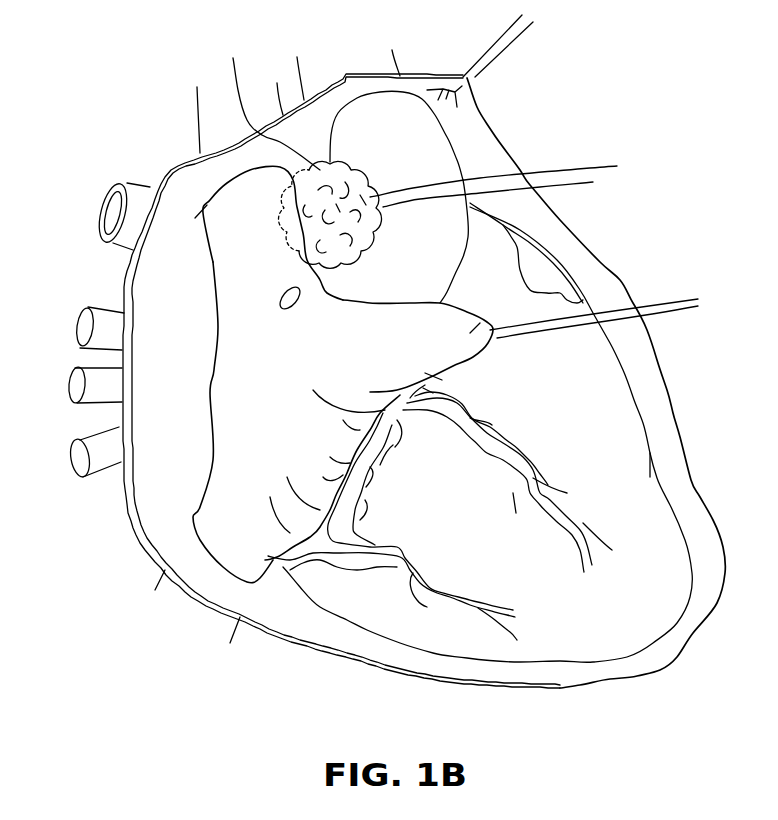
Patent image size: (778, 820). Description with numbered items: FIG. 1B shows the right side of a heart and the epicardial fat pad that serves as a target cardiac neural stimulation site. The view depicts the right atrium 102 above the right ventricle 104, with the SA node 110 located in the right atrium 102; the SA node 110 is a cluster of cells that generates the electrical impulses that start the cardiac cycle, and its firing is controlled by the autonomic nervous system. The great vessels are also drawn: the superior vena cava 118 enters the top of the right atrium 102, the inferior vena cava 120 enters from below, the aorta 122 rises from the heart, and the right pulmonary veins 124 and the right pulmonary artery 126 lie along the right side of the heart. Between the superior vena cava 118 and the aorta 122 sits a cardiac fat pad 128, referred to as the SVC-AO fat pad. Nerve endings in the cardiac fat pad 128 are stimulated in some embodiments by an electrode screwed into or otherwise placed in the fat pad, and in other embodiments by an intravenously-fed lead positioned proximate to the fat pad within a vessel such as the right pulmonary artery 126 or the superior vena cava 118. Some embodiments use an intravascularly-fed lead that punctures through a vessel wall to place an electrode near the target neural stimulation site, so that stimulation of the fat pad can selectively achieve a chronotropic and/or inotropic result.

The right atrium 102 is at (292, 370).
The right ventricle 104 is at (468, 553).
The sinoatrial (SA) node 110 is at (280, 292).
The superior vena cava 118 is at (210, 120).
The inferior vena cava 120 is at (212, 530).
The aorta 122 is at (433, 158).
The right pulmonary veins 124 is at (75, 442).
The right pulmonary artery 126 is at (360, 253).
The cardiac fat pad 128 is at (268, 100).